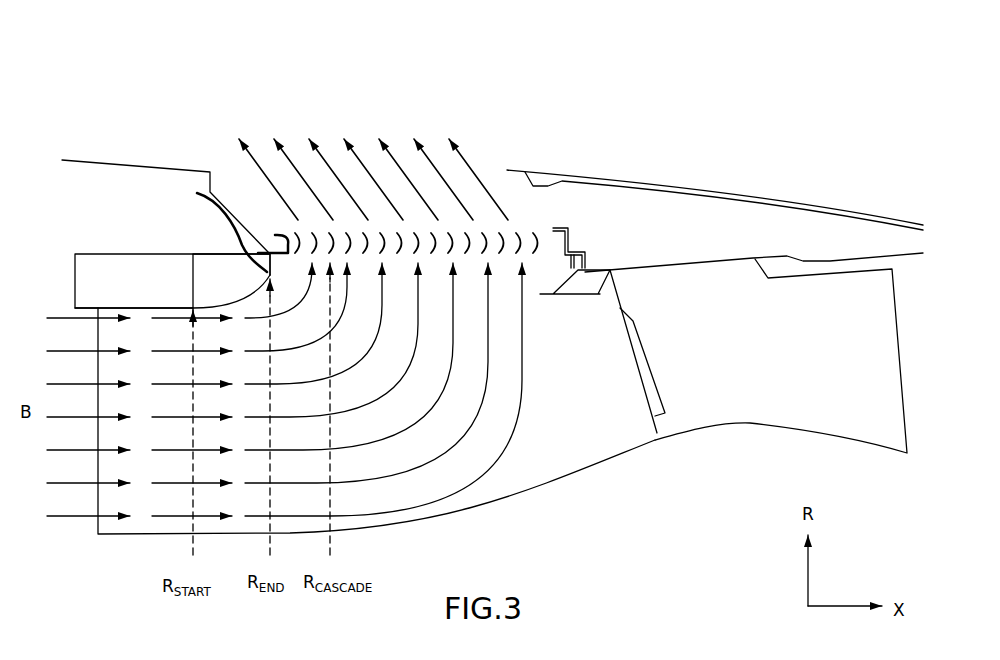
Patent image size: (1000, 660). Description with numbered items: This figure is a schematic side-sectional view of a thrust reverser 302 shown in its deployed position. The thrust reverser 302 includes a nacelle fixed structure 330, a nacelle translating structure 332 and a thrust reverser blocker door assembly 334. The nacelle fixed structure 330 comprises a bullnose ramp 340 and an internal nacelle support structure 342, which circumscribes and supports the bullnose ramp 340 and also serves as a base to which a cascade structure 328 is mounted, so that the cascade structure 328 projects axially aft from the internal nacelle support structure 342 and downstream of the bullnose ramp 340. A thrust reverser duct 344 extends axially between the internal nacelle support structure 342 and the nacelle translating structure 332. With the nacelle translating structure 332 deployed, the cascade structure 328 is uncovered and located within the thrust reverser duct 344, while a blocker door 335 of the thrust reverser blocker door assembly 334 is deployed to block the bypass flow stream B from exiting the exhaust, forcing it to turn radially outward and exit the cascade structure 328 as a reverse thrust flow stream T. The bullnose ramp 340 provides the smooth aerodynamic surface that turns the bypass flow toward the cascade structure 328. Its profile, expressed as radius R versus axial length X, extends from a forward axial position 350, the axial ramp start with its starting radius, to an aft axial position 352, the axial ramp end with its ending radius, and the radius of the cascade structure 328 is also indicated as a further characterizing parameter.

The thrust reverser 302 is at (82, 100).
The cascade structure 328 is at (522, 252).
The nacelle fixed structure 330 is at (75, 259).
The nacelle translating structure 332 is at (686, 190).
The thrust reverser blocker door assembly 334 is at (640, 343).
The blocker door 335 is at (652, 386).
The bullnose ramp 340 is at (234, 296).
The internal nacelle support structure 342 is at (75, 294).
The thrust reverser duct 344 is at (489, 158).
The forward axial position 350 is at (192, 265).
The aft axial position 352 is at (215, 225).